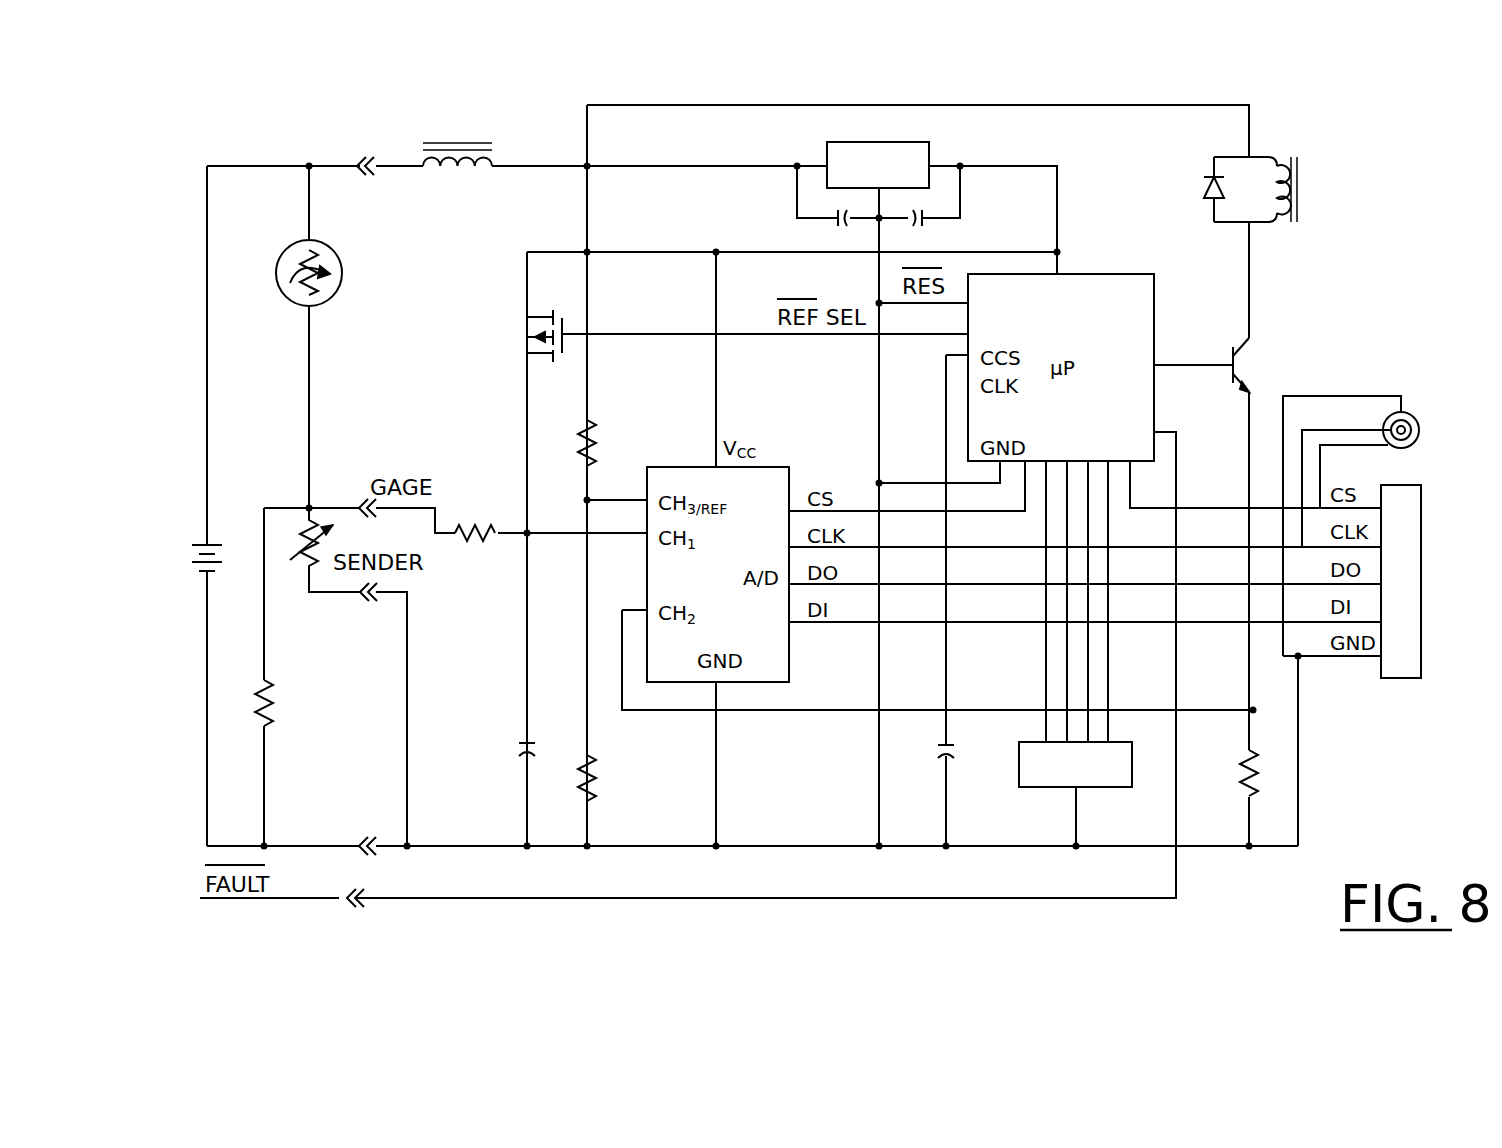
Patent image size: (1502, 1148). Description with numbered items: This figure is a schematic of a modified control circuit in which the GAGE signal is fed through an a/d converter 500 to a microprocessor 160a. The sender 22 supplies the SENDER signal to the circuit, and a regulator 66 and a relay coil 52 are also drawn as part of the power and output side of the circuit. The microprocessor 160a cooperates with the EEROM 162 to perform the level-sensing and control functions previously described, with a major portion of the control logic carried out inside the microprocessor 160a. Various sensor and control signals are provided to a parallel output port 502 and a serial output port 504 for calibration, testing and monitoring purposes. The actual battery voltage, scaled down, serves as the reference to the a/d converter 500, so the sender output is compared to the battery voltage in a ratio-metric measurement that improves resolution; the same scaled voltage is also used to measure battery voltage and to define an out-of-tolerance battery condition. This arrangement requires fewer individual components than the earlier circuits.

The sender (variable resistance sensor) 22 is at (297, 542).
The voltage regulator 66 is at (929, 142).
The relay coil 52 is at (1308, 189).
The microprocessor 160a is at (1131, 274).
The a/d converter 500 is at (782, 467).
The serial output port 504 is at (1445, 410).
The parallel output port 502 is at (1421, 528).
The EEROM 162 is at (1050, 789).